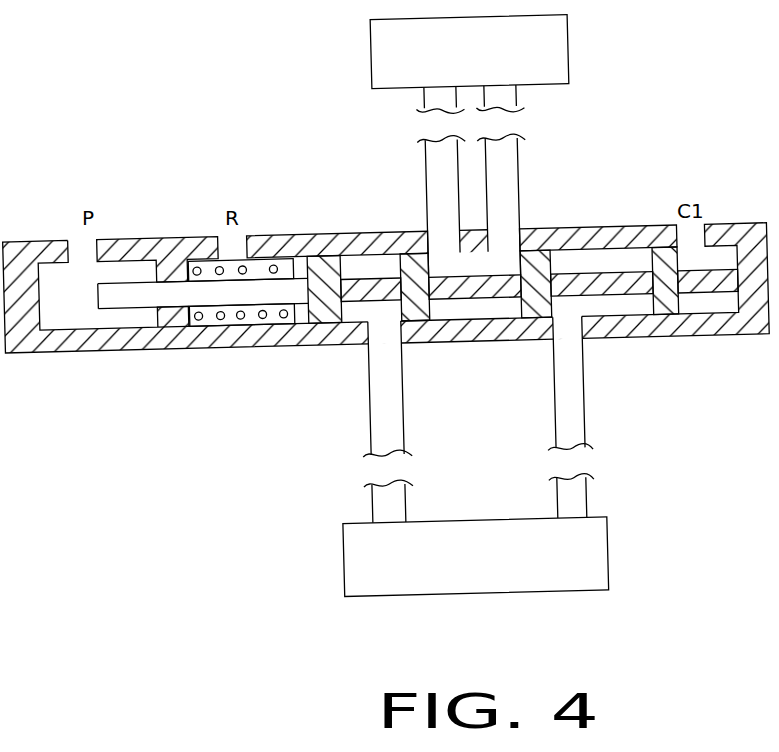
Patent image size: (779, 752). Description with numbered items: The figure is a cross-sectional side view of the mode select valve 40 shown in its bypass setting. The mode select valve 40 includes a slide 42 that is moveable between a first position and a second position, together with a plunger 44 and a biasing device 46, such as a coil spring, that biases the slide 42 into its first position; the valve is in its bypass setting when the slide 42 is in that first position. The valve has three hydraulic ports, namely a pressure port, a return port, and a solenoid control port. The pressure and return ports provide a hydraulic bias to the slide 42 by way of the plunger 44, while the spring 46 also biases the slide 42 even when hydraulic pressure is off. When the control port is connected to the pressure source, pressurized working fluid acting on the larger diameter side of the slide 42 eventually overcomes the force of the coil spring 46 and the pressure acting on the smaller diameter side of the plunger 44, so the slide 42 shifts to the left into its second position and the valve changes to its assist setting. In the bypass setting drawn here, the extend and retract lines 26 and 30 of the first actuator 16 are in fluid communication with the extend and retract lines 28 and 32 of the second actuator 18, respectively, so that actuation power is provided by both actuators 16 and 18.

The mode select valve 40 is at (125, 186).
The second actuator 18 is at (540, 66).
The first actuator 16 is at (537, 575).
The extend fluid conduit 28 is at (425, 208).
The retract fluid conduit 32 is at (518, 204).
The extend fluid conduit 26 is at (368, 435).
The retract fluid conduit 30 is at (585, 428).
The slide 42 is at (488, 298).
The plunger 44 is at (128, 307).
The biasing device 46 is at (242, 316).